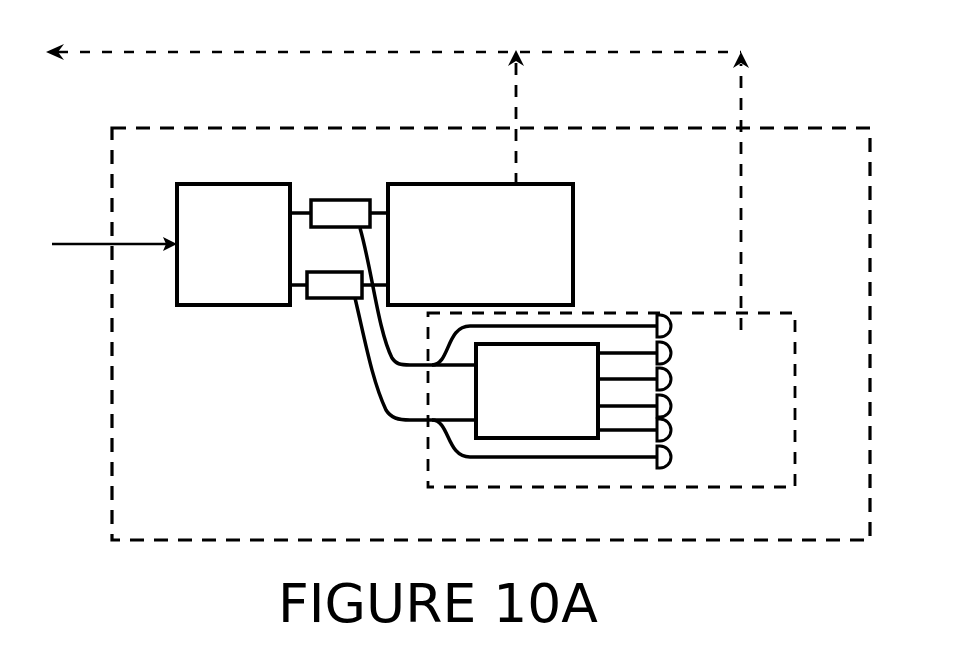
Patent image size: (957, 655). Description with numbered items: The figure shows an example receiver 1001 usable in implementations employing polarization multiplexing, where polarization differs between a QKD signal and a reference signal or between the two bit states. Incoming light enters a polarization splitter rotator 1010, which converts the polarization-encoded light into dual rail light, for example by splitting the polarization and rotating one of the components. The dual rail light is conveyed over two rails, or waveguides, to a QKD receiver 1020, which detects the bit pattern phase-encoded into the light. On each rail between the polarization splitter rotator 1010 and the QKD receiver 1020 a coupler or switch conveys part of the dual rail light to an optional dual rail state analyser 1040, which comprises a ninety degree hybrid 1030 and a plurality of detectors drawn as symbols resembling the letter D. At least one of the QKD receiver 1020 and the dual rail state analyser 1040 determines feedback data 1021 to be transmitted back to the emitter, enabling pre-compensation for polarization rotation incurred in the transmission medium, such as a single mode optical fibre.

The receiver 1001 is at (491, 334).
The polarization splitter rotator 1010 is at (233, 244).
The QKD receiver 1020 is at (480, 244).
The feedback data 1021 is at (397, 168).
The 90 degree hybrid 1030 is at (537, 391).
The dual rail state analyser 1040 is at (611, 400).